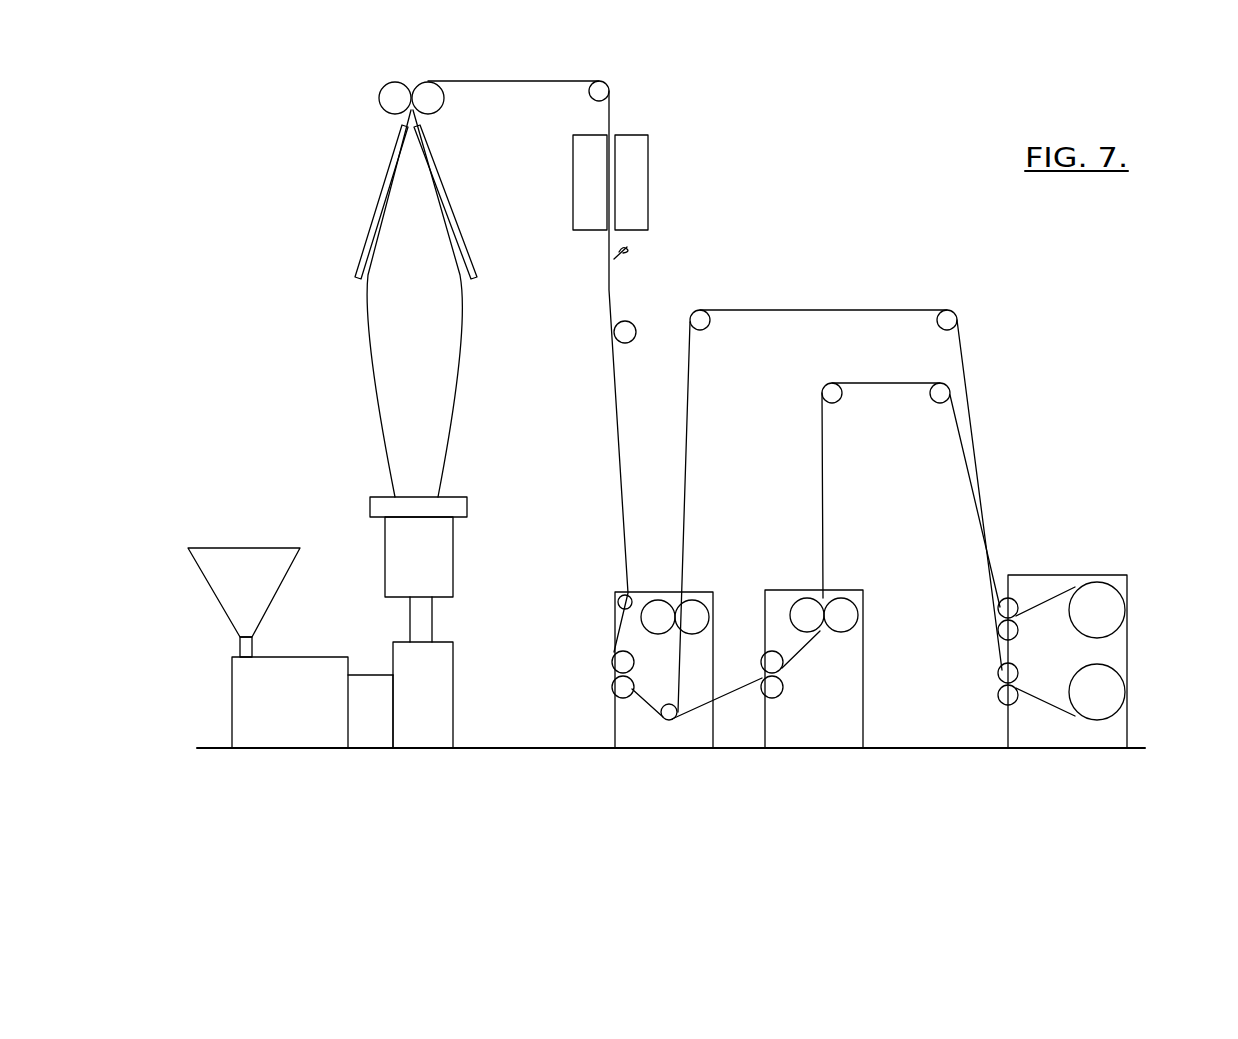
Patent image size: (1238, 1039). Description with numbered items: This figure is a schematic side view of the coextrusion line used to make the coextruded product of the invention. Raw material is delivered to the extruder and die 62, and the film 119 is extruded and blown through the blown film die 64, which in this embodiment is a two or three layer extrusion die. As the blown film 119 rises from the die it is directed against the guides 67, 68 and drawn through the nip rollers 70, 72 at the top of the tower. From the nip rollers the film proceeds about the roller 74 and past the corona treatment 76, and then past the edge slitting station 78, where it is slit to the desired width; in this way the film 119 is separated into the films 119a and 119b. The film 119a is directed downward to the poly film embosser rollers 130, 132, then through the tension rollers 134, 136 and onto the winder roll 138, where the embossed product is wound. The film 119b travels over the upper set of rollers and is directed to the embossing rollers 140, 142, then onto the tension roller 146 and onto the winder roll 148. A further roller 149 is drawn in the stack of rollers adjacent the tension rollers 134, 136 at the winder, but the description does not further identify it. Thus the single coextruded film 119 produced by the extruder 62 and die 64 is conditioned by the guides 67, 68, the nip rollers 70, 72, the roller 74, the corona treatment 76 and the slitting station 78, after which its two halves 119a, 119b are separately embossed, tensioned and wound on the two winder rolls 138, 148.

The extruder and die 62 is at (241, 563).
The blown film die 64 is at (445, 545).
The guide 67 is at (381, 176).
The guide 68 is at (448, 174).
The nip roller 70 is at (395, 83).
The nip roller 72 is at (429, 83).
The roller 74 is at (604, 82).
The corona treatment 76 is at (649, 165).
The edge slitting station 78 is at (626, 255).
The film 119 is at (378, 392).
The film 119a is at (616, 437).
The film 119b is at (628, 447).
The embosser roller 130 is at (657, 602).
The embosser roller 132 is at (696, 603).
The tension roller 134 is at (1012, 598).
The tension roller 136 is at (998, 631).
The winder roll 138 is at (1116, 605).
The embossing roller 140 is at (808, 598).
The embossing roller 142 is at (846, 616).
The tension roller 146 is at (1000, 700).
The winder roll 148 is at (1116, 680).
The roller 149 is at (999, 677).